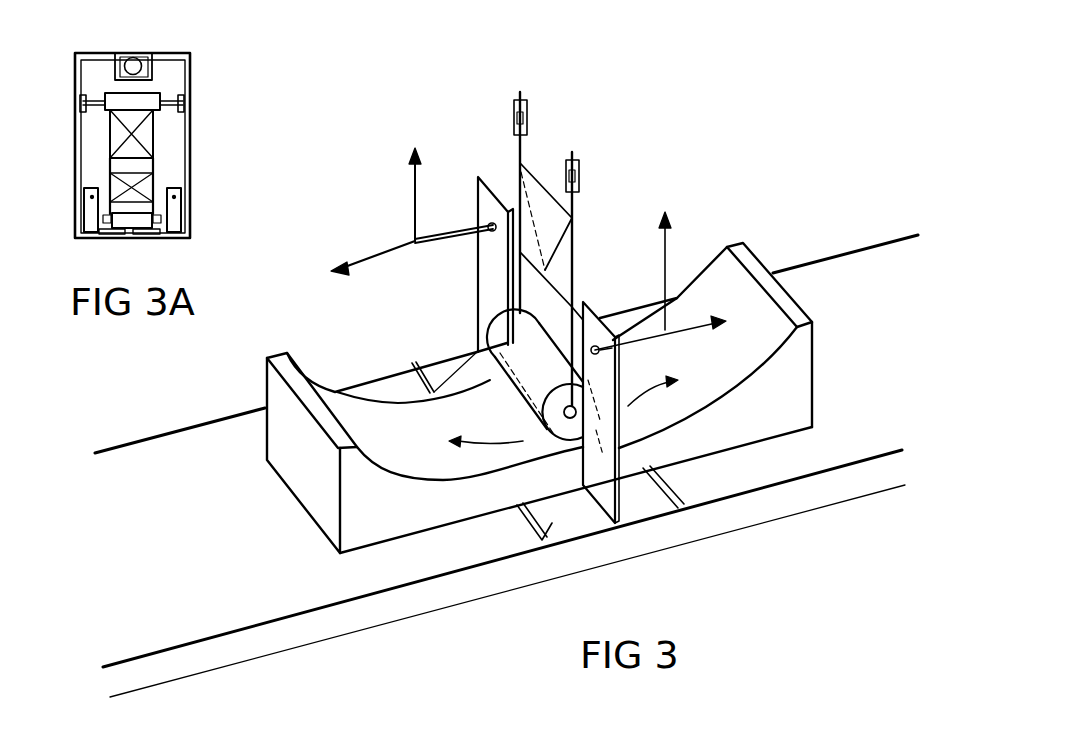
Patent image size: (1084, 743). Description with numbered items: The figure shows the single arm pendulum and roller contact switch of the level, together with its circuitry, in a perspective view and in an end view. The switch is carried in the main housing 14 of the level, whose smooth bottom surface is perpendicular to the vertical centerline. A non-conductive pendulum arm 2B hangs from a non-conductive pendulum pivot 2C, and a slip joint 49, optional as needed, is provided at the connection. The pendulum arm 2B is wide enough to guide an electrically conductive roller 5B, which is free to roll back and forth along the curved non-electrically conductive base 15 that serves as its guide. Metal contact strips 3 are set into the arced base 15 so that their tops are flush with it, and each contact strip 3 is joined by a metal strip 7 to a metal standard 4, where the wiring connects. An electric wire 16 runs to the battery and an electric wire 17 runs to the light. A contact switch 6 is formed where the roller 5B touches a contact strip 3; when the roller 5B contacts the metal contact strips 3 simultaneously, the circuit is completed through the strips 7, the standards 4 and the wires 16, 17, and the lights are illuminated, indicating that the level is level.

In FIG. 3A, the main housing 14 is at (88, 55).
In FIG. 3, the main housing 14 is at (222, 578).
In FIG. 3, the curved non-electrically conductive base 15 is at (700, 387).
In FIG. 3, the electric wire to battery 16 is at (667, 260).
In FIG. 3, the electric wire to light 17 is at (414, 196).
In FIG. 3A, the non-conductive pendulum arm 2B is at (135, 135).
In FIG. 3, the non-conductive pendulum arm 2B is at (575, 252).
In FIG. 3A, the non-conductive pendulum pivot 2C is at (135, 98).
In FIG. 3, the slip joint 49 is at (528, 112).
In FIG. 3A, the metal standard 4 is at (90, 208).
In FIG. 3, the metal standard 4 is at (488, 277).
In FIG. 3A, the electrically conductive roller 5B is at (135, 217).
In FIG. 3, the electrically conductive roller 5B is at (478, 318).
In FIG. 3A, the contact switch 6 is at (105, 238).
In FIG. 3, the contact switch 6 is at (362, 397).
In FIG. 3, the metal strip 7 is at (442, 357).
In FIG. 3, the metal contact strip 3 is at (520, 403).